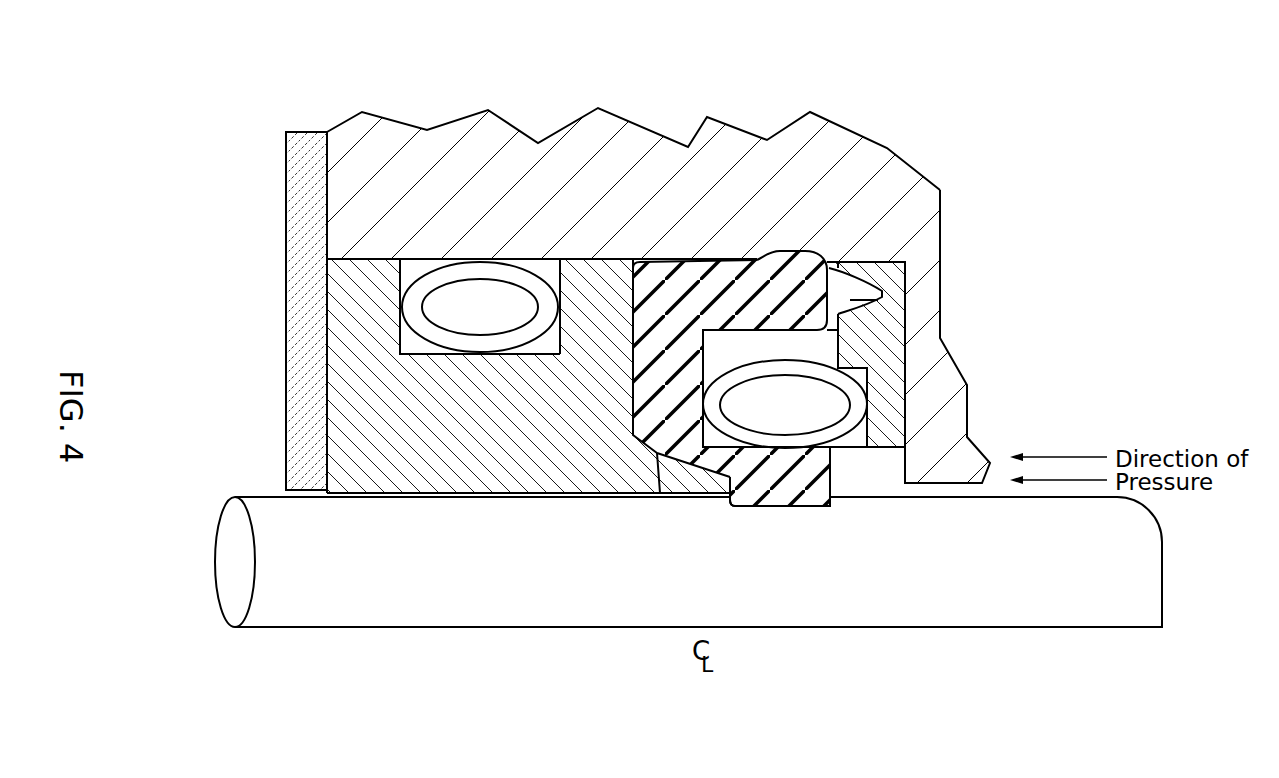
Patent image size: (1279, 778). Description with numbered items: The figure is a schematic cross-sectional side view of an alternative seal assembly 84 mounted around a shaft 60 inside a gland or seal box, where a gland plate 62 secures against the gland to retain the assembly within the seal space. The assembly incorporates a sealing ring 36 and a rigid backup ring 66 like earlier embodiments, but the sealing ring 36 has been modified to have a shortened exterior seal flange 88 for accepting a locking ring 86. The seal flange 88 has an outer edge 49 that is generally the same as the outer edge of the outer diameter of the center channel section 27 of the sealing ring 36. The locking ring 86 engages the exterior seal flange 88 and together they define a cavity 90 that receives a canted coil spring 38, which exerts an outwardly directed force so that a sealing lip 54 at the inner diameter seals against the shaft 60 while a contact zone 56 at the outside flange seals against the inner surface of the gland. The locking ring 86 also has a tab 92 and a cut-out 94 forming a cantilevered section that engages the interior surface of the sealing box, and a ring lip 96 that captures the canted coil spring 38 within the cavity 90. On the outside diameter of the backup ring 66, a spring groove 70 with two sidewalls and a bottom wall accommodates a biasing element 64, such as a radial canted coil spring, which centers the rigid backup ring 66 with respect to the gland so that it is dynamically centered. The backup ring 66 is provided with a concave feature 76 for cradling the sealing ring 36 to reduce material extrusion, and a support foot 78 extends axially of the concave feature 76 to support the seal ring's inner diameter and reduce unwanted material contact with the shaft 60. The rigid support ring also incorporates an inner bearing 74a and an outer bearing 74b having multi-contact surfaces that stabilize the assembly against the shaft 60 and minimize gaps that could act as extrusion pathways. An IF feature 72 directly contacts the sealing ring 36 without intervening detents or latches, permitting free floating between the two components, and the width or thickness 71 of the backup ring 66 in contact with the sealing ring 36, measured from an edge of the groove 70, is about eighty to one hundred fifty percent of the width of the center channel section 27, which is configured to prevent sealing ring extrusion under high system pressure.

The seal assembly 84 is at (806, 64).
The center channel section 27 is at (655, 350).
The outer edge 49 is at (676, 259).
The contact zone 56 is at (810, 251).
The biasing element 64 is at (500, 273).
The width or thickness 71 is at (583, 275).
The IF feature 72 is at (642, 259).
The sealing ring 36 is at (690, 259).
The exterior seal flange 88 is at (748, 258).
The tab 92 is at (907, 264).
The cut-out 94 is at (880, 293).
The locking ring 86 is at (877, 330).
The cavity 90 is at (783, 397).
The canted coil spring 38 is at (857, 410).
The ring lip 96 is at (887, 432).
The spring groove 70 is at (400, 312).
The gland plate 62 is at (286, 371).
The backup ring 66 is at (347, 430).
The shaft 60 is at (232, 566).
The outer bearing 74b is at (347, 498).
The concave feature 76 is at (640, 440).
The inner bearing 74a is at (623, 498).
The support foot 78 is at (660, 500).
The sealing lip 54 is at (823, 508).